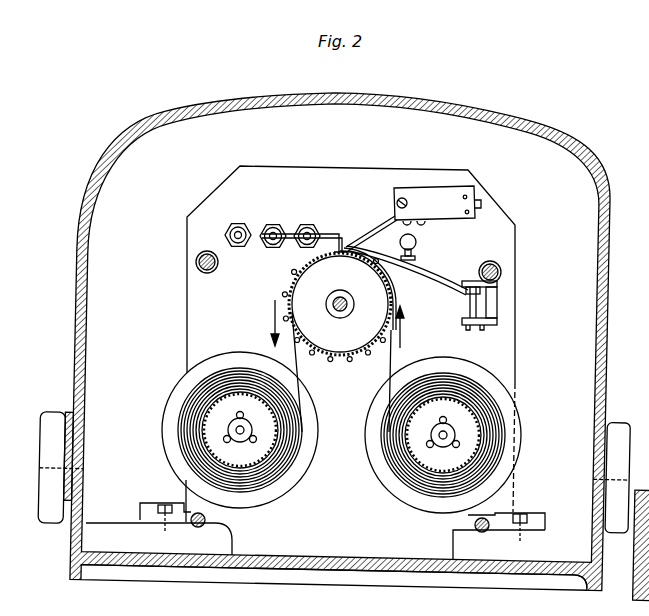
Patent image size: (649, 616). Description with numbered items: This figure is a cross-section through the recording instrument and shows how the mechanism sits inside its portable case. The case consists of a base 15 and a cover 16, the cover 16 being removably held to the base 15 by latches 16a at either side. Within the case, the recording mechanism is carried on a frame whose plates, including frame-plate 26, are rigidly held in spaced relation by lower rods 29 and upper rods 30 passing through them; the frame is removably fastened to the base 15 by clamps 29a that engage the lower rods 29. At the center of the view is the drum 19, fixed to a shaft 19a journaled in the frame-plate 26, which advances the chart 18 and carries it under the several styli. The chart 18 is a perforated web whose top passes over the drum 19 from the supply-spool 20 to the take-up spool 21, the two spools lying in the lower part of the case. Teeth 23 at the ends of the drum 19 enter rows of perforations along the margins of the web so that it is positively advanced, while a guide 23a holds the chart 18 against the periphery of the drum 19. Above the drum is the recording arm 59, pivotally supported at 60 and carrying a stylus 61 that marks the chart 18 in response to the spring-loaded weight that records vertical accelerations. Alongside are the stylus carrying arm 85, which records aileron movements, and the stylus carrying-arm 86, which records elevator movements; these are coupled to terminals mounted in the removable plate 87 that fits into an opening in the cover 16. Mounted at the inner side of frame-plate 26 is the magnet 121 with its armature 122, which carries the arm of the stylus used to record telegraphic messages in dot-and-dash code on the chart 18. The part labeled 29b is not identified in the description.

The base 15 is at (336, 575).
The cover 16 is at (598, 153).
The latches 16a is at (55, 437).
The chart 18 is at (392, 351).
The drum 19 is at (340, 356).
The shaft 19a is at (345, 290).
The supply-spool 20 is at (480, 416).
The take-up spool 21 is at (205, 418).
The teeth 23 is at (318, 358).
The guide 23a is at (462, 310).
The frame-plate 26 is at (187, 225).
The lower rods 29 is at (232, 534).
The clamps 29a is at (155, 504).
The guide plate 29b is at (318, 541).
The upper rods 30 is at (196, 264).
The recording arm 59 is at (447, 284).
The pivot 60 is at (462, 286).
The stylus 61 is at (343, 240).
The stylus carrying arm 85 is at (278, 226).
The stylus carrying-arm 86 is at (313, 228).
The plate 87 is at (238, 223).
The magnet 121 is at (440, 187).
The armature 122 is at (410, 187).